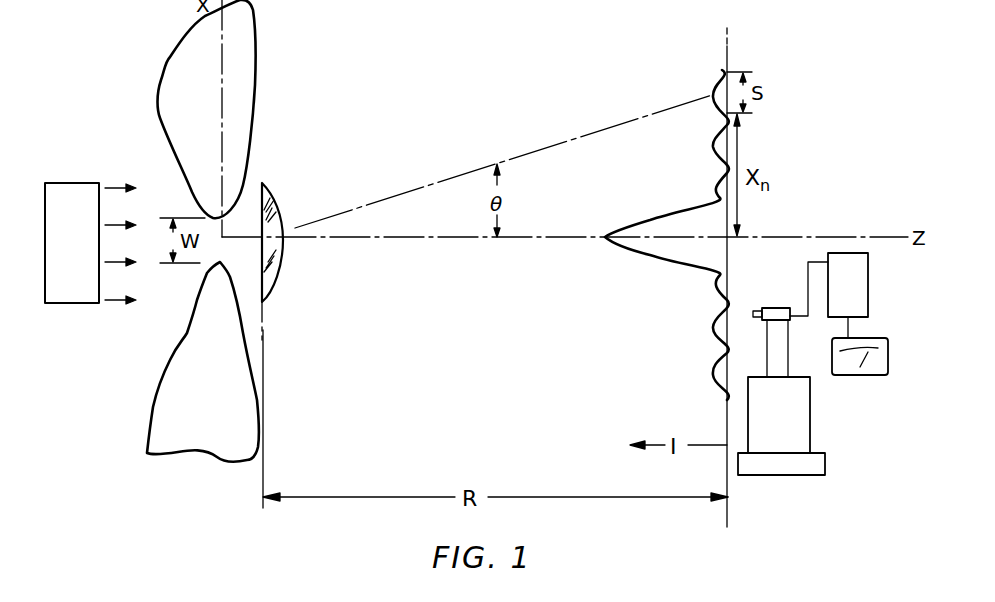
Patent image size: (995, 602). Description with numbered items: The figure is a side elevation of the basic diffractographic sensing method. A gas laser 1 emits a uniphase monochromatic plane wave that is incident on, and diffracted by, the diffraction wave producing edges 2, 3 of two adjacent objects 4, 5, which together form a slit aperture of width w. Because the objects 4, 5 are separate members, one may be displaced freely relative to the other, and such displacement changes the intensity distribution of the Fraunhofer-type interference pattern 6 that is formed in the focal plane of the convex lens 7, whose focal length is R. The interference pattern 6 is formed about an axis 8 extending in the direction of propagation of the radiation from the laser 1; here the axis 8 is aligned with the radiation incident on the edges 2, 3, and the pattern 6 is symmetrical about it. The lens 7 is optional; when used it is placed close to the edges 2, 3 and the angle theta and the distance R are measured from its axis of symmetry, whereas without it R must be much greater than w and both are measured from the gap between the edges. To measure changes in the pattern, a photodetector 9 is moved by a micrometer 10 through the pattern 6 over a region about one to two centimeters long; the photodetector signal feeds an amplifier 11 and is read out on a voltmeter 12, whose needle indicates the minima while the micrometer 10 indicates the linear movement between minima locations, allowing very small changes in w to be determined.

The gas laser 1 is at (76, 255).
The diffraction wave producing edge 2 is at (208, 218).
The diffraction wave producing edge 3 is at (216, 262).
The adjacent object 4 is at (200, 137).
The adjacent object 5 is at (223, 388).
The interference pattern 6 is at (706, 316).
The convex lens 7 is at (274, 218).
The axis 8 is at (358, 238).
The photodetector 9 is at (785, 308).
The micrometer 10 is at (784, 476).
The amplifier 11 is at (860, 302).
The voltmeter 12 is at (876, 374).